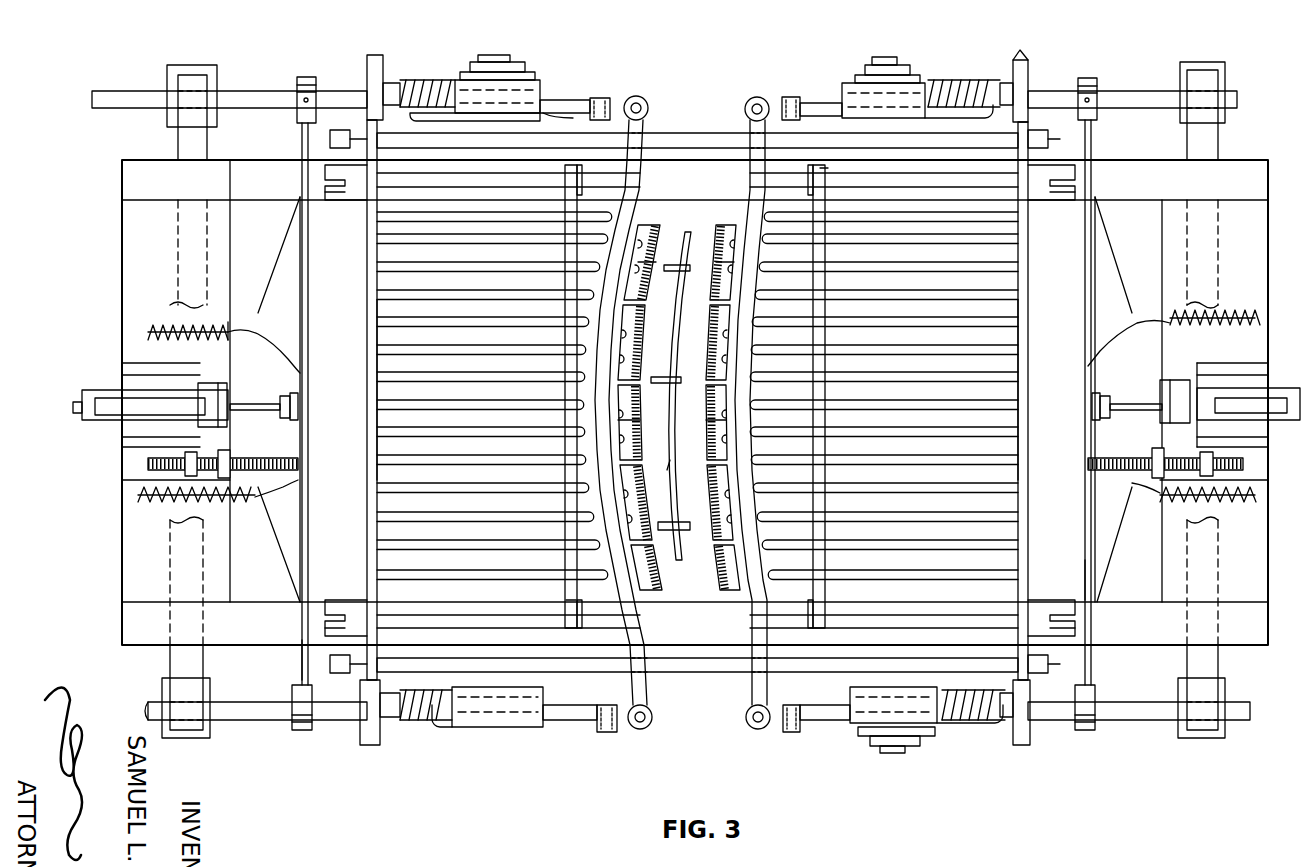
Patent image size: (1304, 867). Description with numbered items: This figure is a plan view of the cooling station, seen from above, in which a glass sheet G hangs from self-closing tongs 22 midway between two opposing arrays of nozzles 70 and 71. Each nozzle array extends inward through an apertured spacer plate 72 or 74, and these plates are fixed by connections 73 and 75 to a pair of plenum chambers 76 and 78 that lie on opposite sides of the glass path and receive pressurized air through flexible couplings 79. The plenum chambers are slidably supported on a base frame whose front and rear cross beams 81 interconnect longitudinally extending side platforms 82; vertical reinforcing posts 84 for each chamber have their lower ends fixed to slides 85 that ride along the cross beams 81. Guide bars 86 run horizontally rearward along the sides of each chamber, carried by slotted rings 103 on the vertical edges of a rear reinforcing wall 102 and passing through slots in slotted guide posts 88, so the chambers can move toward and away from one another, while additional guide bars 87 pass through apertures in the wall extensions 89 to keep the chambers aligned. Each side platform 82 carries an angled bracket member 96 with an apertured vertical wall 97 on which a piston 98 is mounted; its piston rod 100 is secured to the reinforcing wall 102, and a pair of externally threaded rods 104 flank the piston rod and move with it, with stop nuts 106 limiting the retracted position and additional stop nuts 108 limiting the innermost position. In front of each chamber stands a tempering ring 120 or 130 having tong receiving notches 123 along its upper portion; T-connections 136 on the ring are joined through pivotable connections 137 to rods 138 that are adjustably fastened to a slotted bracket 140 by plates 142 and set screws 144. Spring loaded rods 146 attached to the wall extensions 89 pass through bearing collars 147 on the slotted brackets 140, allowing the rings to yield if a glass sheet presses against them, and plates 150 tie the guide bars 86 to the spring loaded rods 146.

The tongs 22 is at (680, 270).
The nozzle array 70 is at (585, 605).
The nozzle array 71 is at (782, 203).
The apertured spacer plate 72 is at (578, 165).
The connections 73 is at (468, 183).
The apertured spacer plate 74 is at (820, 171).
The connections 75 is at (922, 175).
The plenum chamber 76 is at (292, 316).
The plenum chamber 78 is at (1115, 298).
The flexible couplings 79 is at (153, 326).
The cross beams 81 is at (660, 188).
The side platforms 82 is at (129, 547).
The vertical reinforcing posts 84 is at (325, 160).
The slides 85 is at (330, 200).
The guide bars 86 is at (1123, 102).
The additional guide bars 87 is at (711, 130).
The slotted guide posts 88 is at (195, 738).
The wall extensions 89 is at (363, 388).
The angled bracket member 96 is at (188, 375).
The apertured vertical wall 97 is at (221, 380).
The piston 98 is at (73, 408).
The piston rod 100 is at (254, 403).
The reinforcing wall 102 is at (295, 666).
The slotted rings 103 is at (306, 77).
The externally threaded rods 104 is at (265, 459).
The stop nuts 106 is at (226, 478).
The additional stop nuts 108 is at (177, 500).
The tempering ring 120 is at (653, 578).
The tong receiving notches 123 is at (708, 273).
The tempering ring 130 is at (720, 578).
The T-connections 136 is at (636, 96).
The pivotable connections 137 is at (600, 733).
The rods 138 is at (575, 720).
The slotted bracket 140 is at (512, 82).
The plates 142 is at (855, 62).
The set screws 144 is at (500, 60).
The spring loaded rods 146 is at (428, 74).
The bearing collars 147 is at (550, 115).
The plates 150 is at (379, 60).
The glass sheet G is at (658, 473).